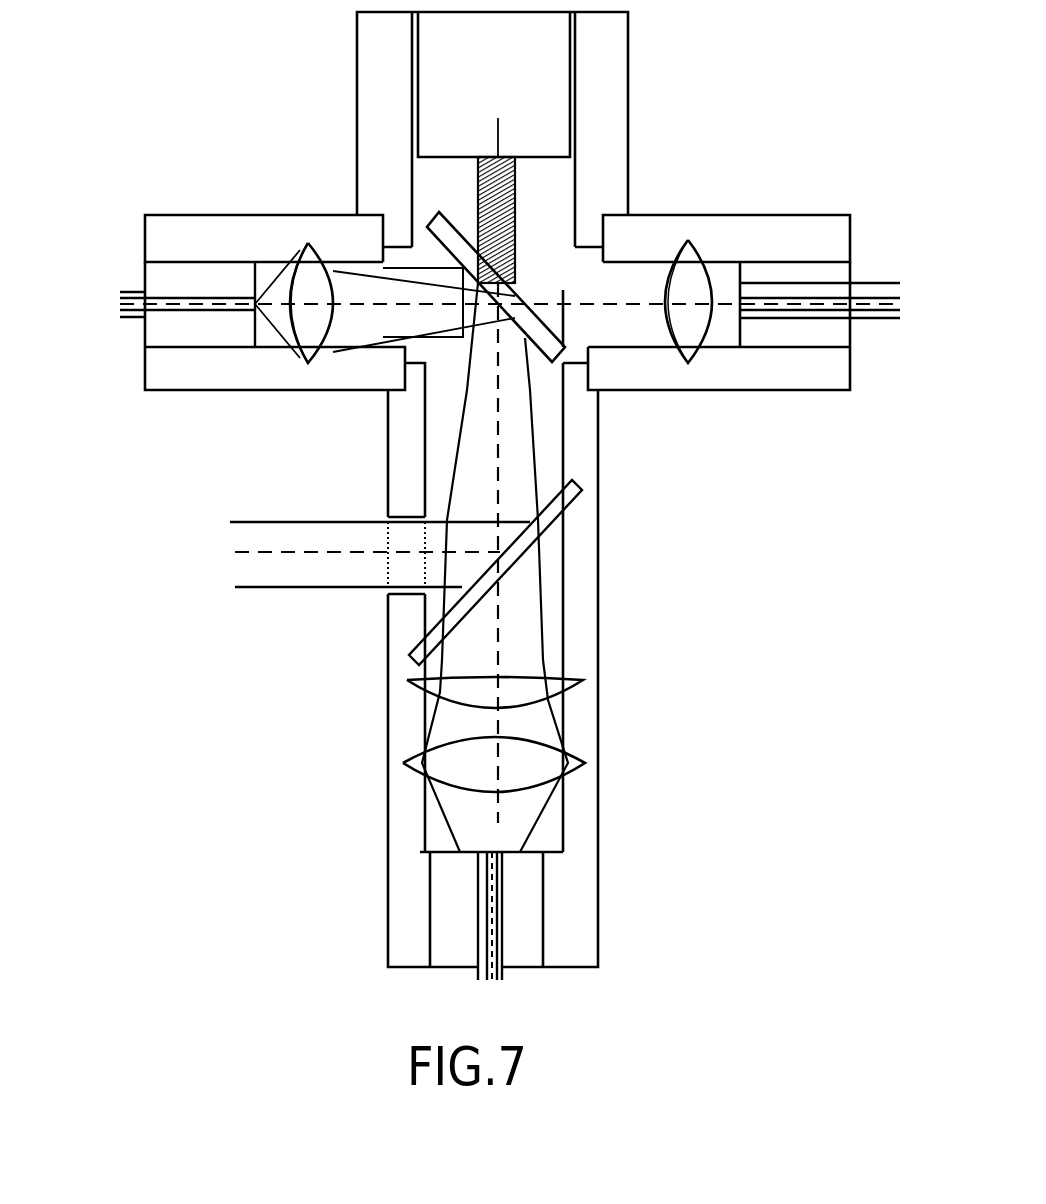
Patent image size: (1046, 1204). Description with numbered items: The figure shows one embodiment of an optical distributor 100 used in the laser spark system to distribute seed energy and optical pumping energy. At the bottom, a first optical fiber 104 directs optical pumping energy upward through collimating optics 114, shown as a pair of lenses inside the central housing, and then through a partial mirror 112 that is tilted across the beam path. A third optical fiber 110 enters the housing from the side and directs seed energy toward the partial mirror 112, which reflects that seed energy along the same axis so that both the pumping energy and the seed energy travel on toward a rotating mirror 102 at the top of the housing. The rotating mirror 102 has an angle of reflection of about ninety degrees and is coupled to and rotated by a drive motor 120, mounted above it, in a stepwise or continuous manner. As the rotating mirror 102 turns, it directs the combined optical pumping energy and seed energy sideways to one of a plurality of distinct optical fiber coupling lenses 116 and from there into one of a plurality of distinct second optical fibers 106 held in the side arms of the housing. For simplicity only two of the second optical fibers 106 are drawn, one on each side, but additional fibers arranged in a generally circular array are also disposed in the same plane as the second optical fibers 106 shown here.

The optical distributor 100 is at (670, 509).
The rotating mirror 102 is at (515, 290).
The first optical fiber 104 is at (502, 975).
The plurality of distinct second optical fibers 106 is at (122, 291).
The third optical fiber 110 is at (247, 522).
The partial mirror 112 is at (409, 656).
The collimating optics 114 is at (400, 731).
The plurality of distinct optical fiber coupling lenses 116 is at (297, 258).
The drive motor 120 is at (549, 137).